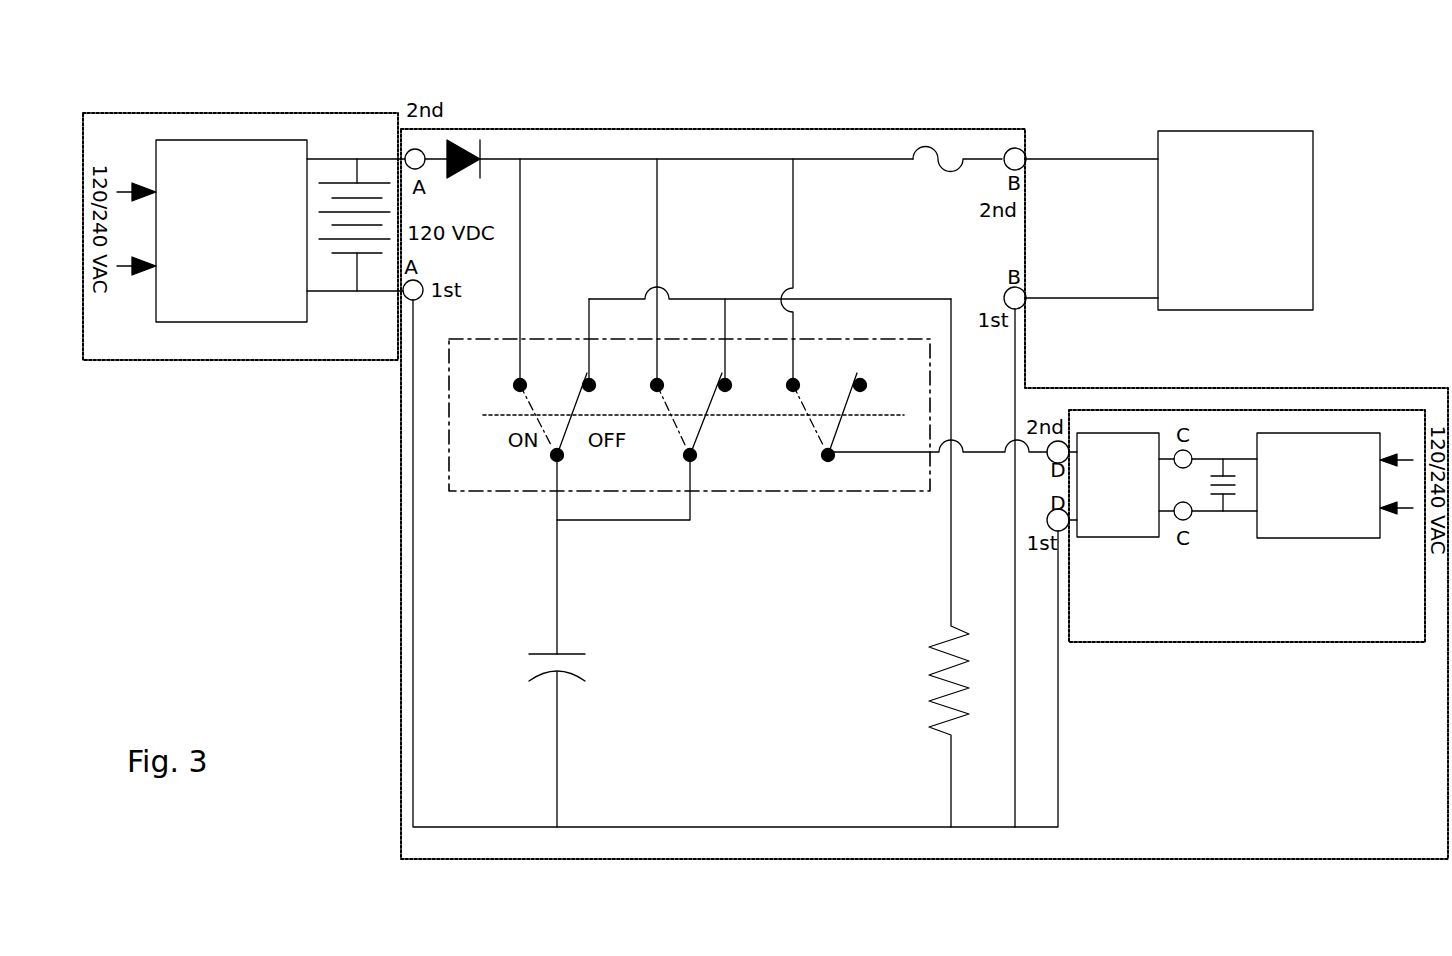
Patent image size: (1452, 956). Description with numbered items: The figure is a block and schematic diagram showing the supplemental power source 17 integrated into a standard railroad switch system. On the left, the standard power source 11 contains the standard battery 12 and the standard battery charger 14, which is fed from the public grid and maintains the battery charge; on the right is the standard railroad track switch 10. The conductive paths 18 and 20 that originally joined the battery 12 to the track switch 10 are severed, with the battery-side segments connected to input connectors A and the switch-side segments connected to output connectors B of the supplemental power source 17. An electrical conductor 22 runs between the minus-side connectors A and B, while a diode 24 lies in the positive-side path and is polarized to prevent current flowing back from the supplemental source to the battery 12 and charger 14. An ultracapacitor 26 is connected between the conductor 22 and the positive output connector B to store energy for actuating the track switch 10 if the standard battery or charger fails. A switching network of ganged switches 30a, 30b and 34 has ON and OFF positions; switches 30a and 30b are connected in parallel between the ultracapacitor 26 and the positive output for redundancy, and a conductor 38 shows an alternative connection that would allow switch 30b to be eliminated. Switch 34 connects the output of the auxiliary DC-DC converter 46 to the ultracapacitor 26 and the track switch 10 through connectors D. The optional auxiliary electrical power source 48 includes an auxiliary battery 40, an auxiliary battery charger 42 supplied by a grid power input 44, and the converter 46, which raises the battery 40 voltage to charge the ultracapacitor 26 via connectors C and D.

The railroad track switch 10 is at (1248, 157).
The standard power source 11 is at (240, 113).
The standard battery 12 is at (340, 183).
The standard battery charger 14 is at (208, 165).
The supplemental power source 17 is at (632, 129).
The conductive path 18 is at (375, 158).
The conductive path 20 is at (340, 291).
The electrical conductor 22 is at (413, 534).
The diode 24 is at (462, 150).
The ultracapacitor 26 is at (598, 641).
The first electrical switch 30a is at (557, 455).
The second electrical switch 30b is at (690, 455).
The electrical switch 34 is at (828, 455).
The conductor 38 is at (765, 314).
The auxiliary battery 40 is at (1227, 495).
The auxiliary battery charger 42 is at (1312, 525).
The power input 44 is at (1402, 508).
The auxiliary DC-DC converter 46 is at (1145, 525).
The auxiliary electrical power source 48 is at (1325, 410).